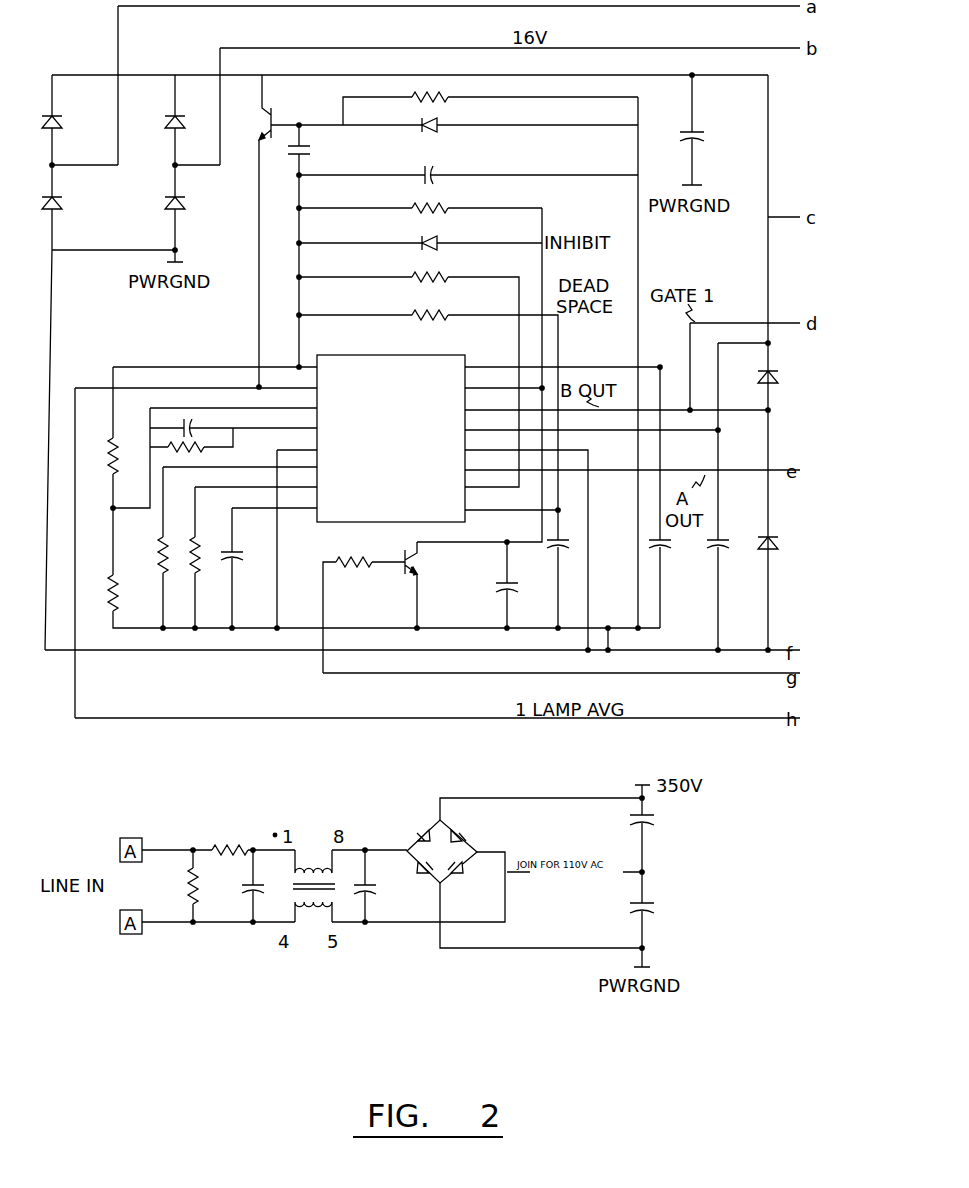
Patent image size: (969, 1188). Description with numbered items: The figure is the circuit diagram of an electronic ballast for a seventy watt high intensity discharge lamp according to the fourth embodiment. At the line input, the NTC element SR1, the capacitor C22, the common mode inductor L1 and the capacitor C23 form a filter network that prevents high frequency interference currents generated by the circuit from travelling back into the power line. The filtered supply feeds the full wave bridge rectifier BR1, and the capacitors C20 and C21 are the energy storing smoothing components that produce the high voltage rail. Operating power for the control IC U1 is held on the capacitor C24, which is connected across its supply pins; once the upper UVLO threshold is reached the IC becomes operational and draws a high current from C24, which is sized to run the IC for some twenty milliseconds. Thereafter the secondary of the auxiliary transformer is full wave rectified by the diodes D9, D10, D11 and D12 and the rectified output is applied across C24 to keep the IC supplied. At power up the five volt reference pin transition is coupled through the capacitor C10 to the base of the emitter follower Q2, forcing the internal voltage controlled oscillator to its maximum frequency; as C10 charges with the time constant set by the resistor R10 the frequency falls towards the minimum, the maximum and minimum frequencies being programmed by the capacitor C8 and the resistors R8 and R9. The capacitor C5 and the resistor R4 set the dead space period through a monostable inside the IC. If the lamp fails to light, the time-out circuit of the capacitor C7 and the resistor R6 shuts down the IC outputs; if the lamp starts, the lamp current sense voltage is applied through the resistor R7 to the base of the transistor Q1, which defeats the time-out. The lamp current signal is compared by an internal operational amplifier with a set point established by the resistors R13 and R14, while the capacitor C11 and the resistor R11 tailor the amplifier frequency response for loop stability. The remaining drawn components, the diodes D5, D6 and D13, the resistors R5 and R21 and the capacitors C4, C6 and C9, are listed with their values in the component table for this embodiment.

The rectifier diode D9 is at (64, 121).
The rectifier diode D10 is at (157, 121).
The rectifier diode D11 is at (108, 407).
The rectifier diode D12 is at (195, 213).
The emitter follower transistor Q2 is at (447, 232).
The coupling capacitor C10 is at (318, 246).
The time constant resistor R10 is at (490, 100).
The capacitor C9 is at (468, 362).
The time-out resistor R6 is at (421, 364).
The diode D13 is at (420, 235).
The resistor R5 is at (409, 371).
The dead space resistor R4 is at (428, 416).
The control IC U1 is at (422, 524).
The supply capacitor C24 is at (709, 129).
The diode D5 is at (781, 386).
The diode D6 is at (779, 558).
The dead space capacitor C5 is at (560, 550).
The capacitor C6 is at (665, 550).
The capacitor C4 is at (722, 550).
The time-out capacitor C7 is at (494, 585).
The transistor Q1 is at (427, 586).
The base resistor R7 is at (364, 615).
The set point resistor R13 is at (129, 438).
The compensation capacitor C11 is at (233, 423).
The compensation resistor R11 is at (186, 452).
The VCO programming resistor R9 is at (159, 558).
The VCO programming resistor R8 is at (202, 558).
The set point resistor R14 is at (384, 568).
The VCO programming capacitor C8 is at (241, 569).
The resistor R21 is at (171, 886).
The NTC thermistor SR1 is at (231, 837).
The filter capacitor C22 is at (236, 886).
The common mode inductor L1 is at (308, 868).
The filter capacitor C23 is at (379, 886).
The bridge rectifier BR1 is at (524, 873).
The smoothing capacitor C20 is at (655, 849).
The smoothing capacitor C21 is at (655, 935).